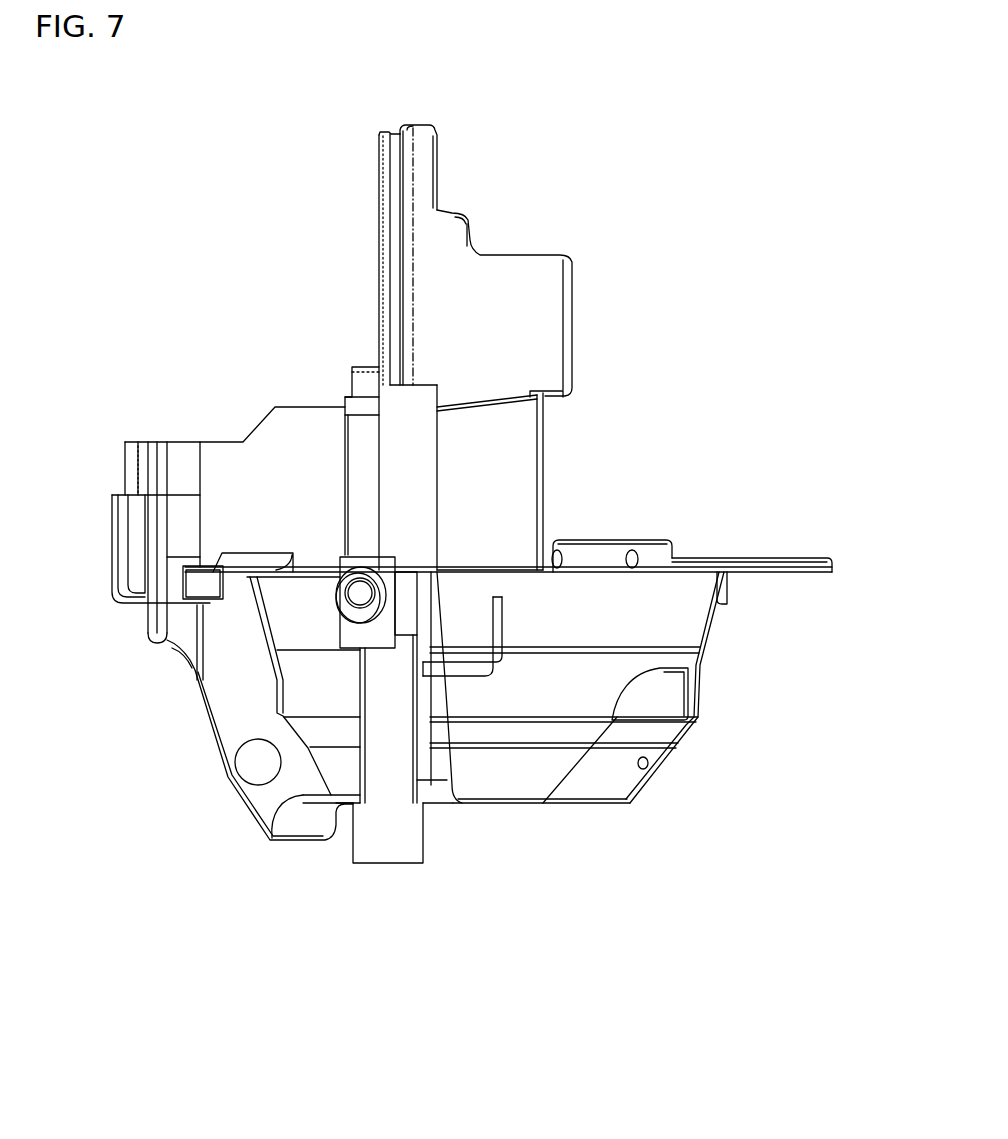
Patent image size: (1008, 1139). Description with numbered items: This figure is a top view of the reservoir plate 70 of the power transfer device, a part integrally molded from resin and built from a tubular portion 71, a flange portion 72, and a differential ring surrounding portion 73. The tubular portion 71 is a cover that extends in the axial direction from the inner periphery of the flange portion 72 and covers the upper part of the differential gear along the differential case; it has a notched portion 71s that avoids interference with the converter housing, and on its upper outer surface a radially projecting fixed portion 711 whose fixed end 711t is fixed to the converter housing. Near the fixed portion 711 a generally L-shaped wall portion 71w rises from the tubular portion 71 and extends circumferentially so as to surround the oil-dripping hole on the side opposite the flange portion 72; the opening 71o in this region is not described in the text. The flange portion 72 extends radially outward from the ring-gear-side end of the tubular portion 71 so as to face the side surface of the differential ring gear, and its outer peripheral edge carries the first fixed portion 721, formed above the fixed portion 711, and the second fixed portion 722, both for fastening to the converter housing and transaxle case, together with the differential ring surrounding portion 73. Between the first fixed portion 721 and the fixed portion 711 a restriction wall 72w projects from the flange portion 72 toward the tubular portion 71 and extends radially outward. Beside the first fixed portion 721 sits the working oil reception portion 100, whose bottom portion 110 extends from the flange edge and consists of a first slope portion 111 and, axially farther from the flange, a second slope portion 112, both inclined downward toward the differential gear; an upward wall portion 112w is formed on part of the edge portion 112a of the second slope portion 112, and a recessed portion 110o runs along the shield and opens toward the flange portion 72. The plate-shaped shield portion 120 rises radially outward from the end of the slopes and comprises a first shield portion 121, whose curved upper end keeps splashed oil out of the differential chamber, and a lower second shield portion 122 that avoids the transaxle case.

The reservoir plate 70 is at (197, 186).
The working oil reception portion 100 is at (519, 187).
The bottom portion 110 is at (640, 365).
The recessed portion 110o is at (412, 153).
The first slope portion 111 is at (490, 443).
The second slope portion 112 is at (490, 391).
The edge portion 112a is at (473, 237).
The wall portion 112w is at (568, 333).
The shield portion 120 is at (258, 281).
The first shield portion 121 is at (413, 427).
The second shield portion 122 is at (384, 322).
The tubular portion 71 is at (527, 695).
The opening of base frame 71o is at (467, 653).
The notched portion 71s is at (644, 763).
The wall portion 71w is at (503, 620).
The fixed portion 711 is at (423, 727).
The fixed end 711t is at (395, 847).
The flange portion 72 is at (794, 575).
The restriction wall 72w is at (407, 610).
The first fixed portion 721 is at (357, 637).
The second fixed portion 722 is at (203, 567).
The differential ring surrounding portion 73 is at (243, 482).